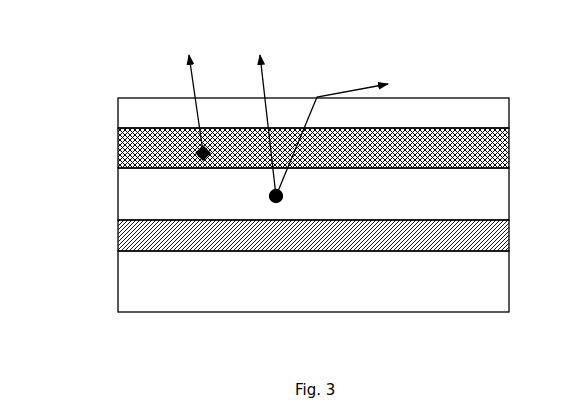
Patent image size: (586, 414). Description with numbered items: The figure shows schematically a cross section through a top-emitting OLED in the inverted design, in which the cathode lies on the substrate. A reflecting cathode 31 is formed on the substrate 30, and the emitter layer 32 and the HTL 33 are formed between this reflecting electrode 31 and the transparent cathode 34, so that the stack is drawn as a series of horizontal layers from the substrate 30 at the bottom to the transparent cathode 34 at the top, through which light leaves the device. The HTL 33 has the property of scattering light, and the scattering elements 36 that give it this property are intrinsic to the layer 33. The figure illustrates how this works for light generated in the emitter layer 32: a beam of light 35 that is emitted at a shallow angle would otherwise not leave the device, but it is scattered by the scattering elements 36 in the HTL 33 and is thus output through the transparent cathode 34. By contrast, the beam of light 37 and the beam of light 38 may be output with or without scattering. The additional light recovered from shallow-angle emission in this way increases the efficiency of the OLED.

The substrate 30 is at (495, 281).
The reflecting cathode 31 is at (495, 232).
The emitter layer 32 is at (495, 196).
The HTL 33 is at (495, 149).
The transparent cathode 34 is at (495, 114).
The beam of light 35 is at (185, 91).
The scattering elements 36 is at (200, 153).
The beam of light 37 is at (268, 116).
The beam of light 38 is at (343, 130).